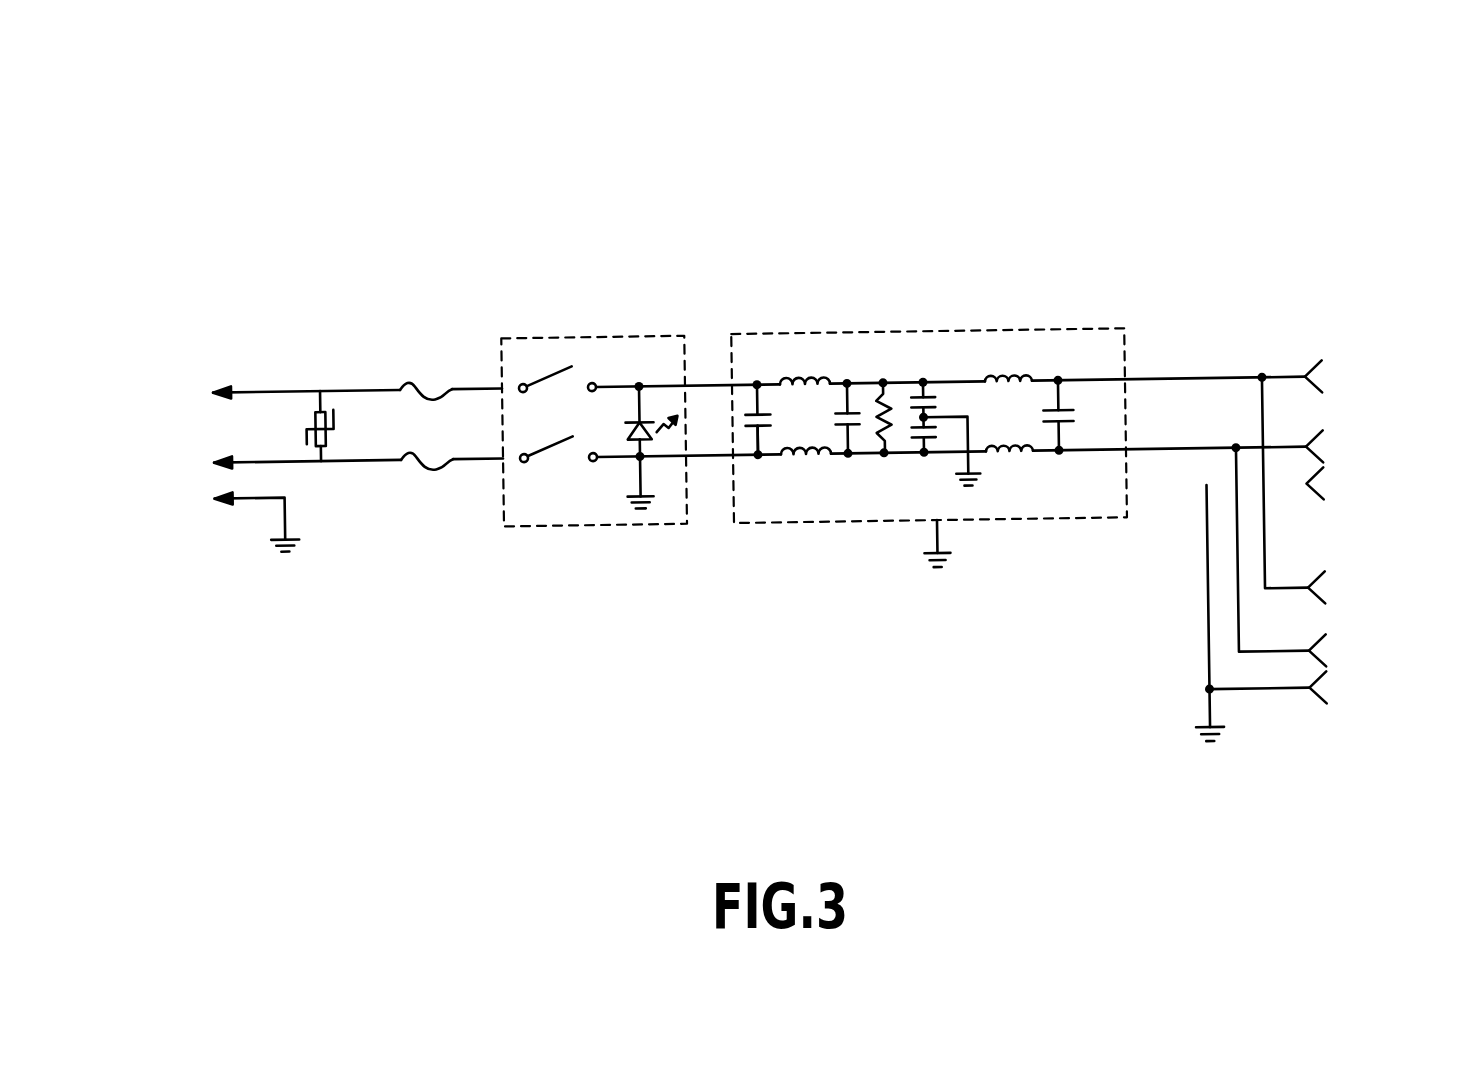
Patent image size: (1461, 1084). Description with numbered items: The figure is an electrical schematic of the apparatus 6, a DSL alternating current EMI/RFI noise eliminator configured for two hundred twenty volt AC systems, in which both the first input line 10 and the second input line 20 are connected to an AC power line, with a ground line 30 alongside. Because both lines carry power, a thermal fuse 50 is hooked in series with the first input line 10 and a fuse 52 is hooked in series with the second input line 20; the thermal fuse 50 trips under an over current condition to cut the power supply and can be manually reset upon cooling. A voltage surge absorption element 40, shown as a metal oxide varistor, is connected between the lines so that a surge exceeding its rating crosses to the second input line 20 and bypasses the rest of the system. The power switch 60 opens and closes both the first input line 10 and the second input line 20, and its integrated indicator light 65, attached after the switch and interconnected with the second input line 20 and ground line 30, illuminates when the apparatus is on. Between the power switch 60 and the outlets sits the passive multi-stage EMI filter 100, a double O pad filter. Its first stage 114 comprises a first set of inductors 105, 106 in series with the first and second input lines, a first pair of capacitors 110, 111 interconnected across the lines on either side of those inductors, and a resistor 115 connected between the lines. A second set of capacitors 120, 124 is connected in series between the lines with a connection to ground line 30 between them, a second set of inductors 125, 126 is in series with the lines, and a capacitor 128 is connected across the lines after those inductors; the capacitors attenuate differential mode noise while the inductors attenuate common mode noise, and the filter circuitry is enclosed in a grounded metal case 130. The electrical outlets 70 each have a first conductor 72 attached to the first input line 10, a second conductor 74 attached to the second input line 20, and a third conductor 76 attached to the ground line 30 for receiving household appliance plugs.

The apparatus 6 is at (985, 223).
The first input line 10 is at (213, 387).
The second input line 20 is at (213, 457).
The ground line 30 is at (213, 493).
The voltage surge absorption element 40 is at (333, 410).
The thermal fuse 50 is at (408, 385).
The fuse 52 is at (432, 465).
The power switch 60 is at (548, 378).
The indicator light 65 is at (646, 395).
The electrical outlets 70 is at (1388, 530).
The first conductor 72 is at (1313, 373).
The second conductor 74 is at (1317, 446).
The third conductor 76 is at (1318, 503).
The passive multi-stage EMI filter 100 is at (972, 356).
The inductor 105 is at (787, 381).
The inductor 106 is at (778, 490).
The capacitor 110 is at (747, 440).
The capacitor 111 is at (853, 434).
The first stage 114 is at (850, 357).
The resistor 115 is at (862, 400).
The capacitor 120 is at (935, 404).
The lower series capacitor 124 is at (900, 451).
The inductor 125 is at (1030, 374).
The inductor 126 is at (1018, 468).
The capacitor 128 is at (1090, 419).
The grounded metal case 130 is at (832, 526).